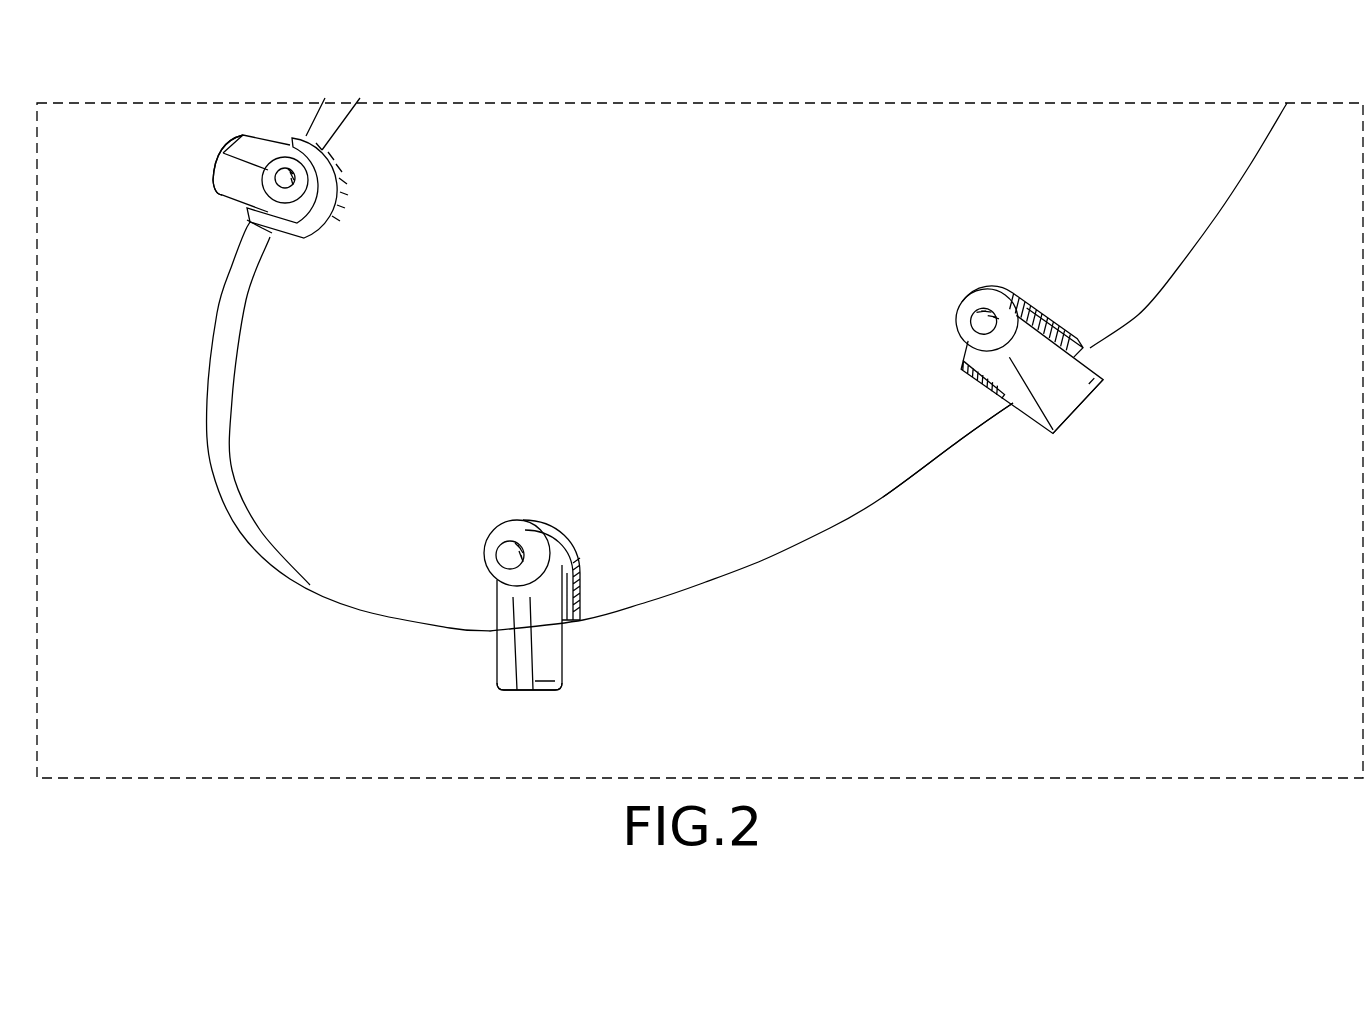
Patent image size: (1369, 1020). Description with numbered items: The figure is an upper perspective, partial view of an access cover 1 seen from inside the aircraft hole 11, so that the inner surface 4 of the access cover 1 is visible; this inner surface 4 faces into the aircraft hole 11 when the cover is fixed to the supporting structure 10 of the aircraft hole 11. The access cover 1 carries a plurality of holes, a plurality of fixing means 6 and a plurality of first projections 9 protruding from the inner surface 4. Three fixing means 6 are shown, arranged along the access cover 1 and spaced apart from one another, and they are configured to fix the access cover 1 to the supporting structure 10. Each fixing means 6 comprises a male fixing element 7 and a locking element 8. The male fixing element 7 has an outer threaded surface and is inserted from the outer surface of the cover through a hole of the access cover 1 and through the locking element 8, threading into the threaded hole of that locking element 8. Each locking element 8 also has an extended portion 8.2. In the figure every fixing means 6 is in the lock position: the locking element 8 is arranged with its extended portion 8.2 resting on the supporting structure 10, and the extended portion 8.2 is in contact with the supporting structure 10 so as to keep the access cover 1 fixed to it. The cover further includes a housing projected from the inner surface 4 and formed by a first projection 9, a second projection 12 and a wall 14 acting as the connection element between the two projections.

The access cover 1 is at (1085, 55).
The inner surface 4 is at (735, 155).
The fixing means 6 is at (647, 387).
The male fixing element 7 is at (238, 178).
The locking element 8 is at (306, 190).
The extended portion 8.2 is at (243, 136).
The first projection 9 is at (275, 240).
The supporting structure 10 is at (1133, 655).
The aircraft hole 11 is at (913, 523).
The second projection 12 is at (290, 140).
The wall 14 is at (330, 228).